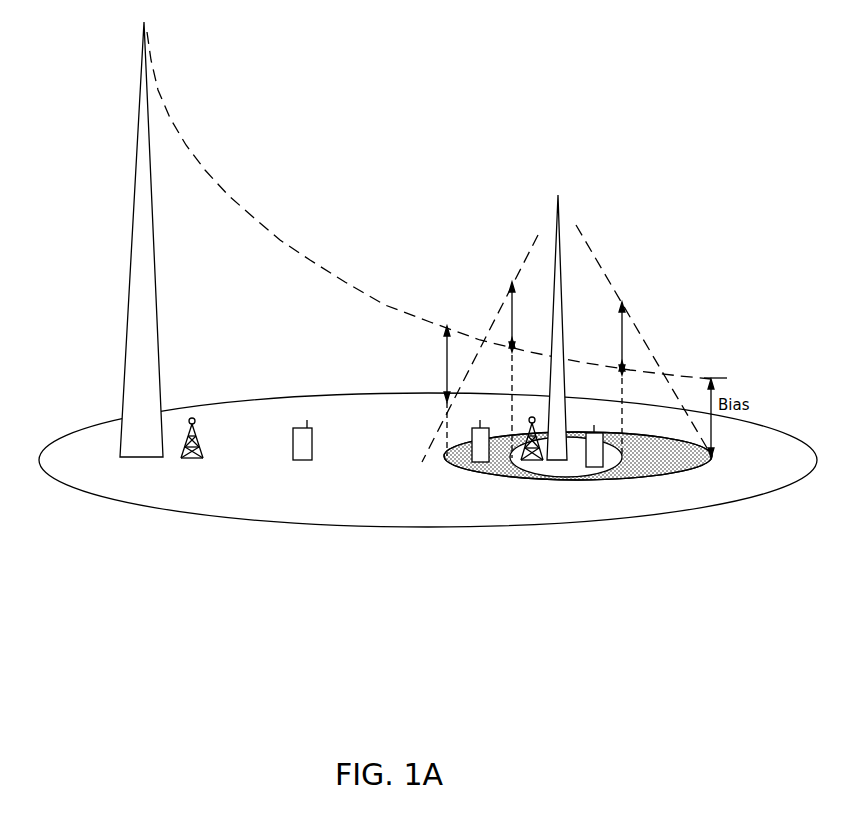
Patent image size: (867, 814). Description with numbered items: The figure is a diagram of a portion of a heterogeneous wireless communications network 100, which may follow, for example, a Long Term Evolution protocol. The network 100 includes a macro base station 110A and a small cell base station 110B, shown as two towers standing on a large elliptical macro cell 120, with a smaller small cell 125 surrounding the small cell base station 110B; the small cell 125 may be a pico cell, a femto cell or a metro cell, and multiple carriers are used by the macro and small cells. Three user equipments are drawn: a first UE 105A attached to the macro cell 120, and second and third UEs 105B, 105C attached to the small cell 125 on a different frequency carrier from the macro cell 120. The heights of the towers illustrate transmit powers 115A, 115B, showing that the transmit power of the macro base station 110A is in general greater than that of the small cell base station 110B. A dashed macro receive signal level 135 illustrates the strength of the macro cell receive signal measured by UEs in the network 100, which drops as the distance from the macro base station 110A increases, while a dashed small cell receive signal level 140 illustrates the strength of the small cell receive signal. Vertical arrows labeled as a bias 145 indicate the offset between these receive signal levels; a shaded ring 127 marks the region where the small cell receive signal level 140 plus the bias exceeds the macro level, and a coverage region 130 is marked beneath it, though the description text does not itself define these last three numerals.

The wireless communications network 100 is at (63, 55).
The first UE 105A is at (292, 445).
The second UE 105B is at (456, 450).
The third UE 105C is at (597, 428).
The macro base station 110A is at (203, 448).
The small cell base station 110B is at (529, 413).
The transmit power of macro base station 115A is at (158, 238).
The transmit power of small cell base station 115B is at (563, 292).
The macro cell 120 is at (372, 514).
The small cell 125 is at (500, 479).
The cell range expansion region 127 is at (578, 456).
The small cell coverage area 130 is at (573, 479).
The macro receive signal level 135 is at (190, 143).
The small cell receive signal level 140 is at (543, 220).
The bias 145 is at (445, 369).